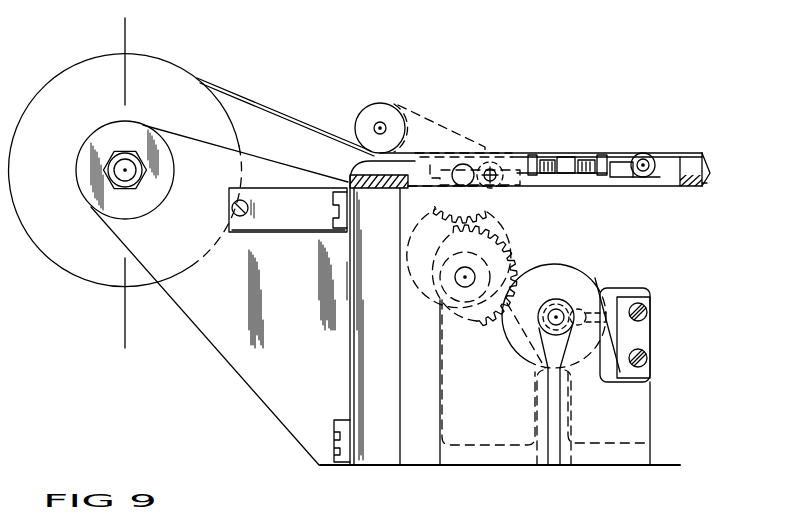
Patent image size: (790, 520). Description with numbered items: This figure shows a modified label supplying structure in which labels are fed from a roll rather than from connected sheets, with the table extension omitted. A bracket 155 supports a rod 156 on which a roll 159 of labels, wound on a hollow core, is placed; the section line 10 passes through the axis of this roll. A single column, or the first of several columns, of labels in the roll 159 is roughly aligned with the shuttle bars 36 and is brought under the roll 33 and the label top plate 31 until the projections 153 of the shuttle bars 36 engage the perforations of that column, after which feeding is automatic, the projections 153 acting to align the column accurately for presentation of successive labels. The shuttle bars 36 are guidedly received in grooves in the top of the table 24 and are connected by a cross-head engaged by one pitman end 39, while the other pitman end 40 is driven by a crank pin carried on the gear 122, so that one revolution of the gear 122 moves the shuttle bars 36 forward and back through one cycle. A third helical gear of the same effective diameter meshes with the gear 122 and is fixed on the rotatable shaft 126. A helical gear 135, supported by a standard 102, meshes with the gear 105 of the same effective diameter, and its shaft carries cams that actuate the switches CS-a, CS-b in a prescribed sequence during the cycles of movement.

The section line 10 is at (108, 32).
The roll of labels 159 is at (158, 62).
The rod 156 is at (125, 181).
The bracket 155 is at (262, 409).
The roll 33 is at (367, 105).
The gear 122 is at (461, 123).
The pitman end 40 is at (515, 148).
The label top plate 31 is at (678, 149).
The rotatable shaft 126 is at (568, 177).
The pitman end 39 is at (629, 168).
The projections 153 is at (663, 152).
The shuttle bars 36 is at (692, 180).
The table 24 is at (707, 183).
The gear 105 is at (508, 245).
The helical gear 135 is at (582, 274).
The standard 102 is at (643, 415).
The switch CS-a is at (656, 295).
The switch CS-b is at (680, 353).